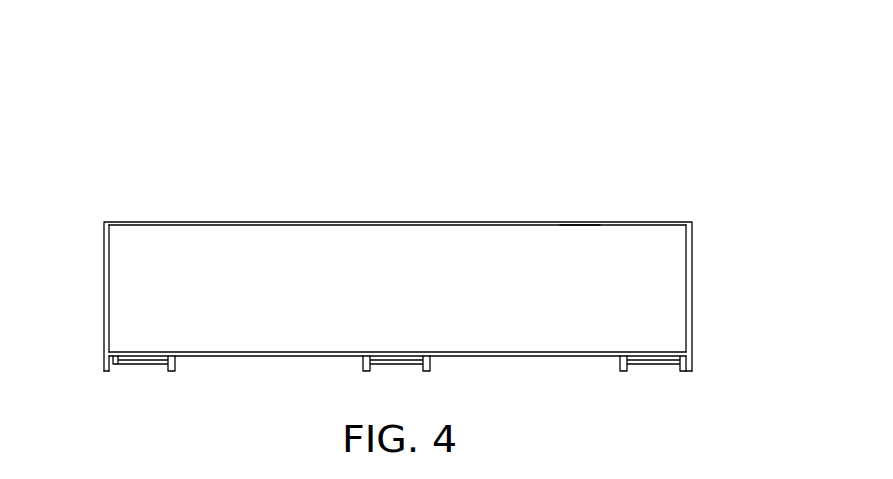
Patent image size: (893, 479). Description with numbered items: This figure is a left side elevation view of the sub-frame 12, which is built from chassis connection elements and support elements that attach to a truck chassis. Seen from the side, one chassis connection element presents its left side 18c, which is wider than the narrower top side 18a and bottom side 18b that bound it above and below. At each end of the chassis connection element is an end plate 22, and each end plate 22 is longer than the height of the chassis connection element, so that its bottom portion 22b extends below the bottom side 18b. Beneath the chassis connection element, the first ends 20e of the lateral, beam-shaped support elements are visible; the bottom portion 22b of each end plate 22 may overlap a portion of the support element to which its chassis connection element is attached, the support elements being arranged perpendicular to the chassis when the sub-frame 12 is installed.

The sub-frame 12 is at (178, 110).
The top side of chassis connection element 18a is at (257, 223).
The bottom side of chassis connection element 18b is at (308, 357).
The left side of chassis connection element 18c is at (570, 236).
The end plate 22 is at (104, 299).
The bottom portion of end plate 22b is at (104, 366).
The first end of support element 20e is at (175, 360).